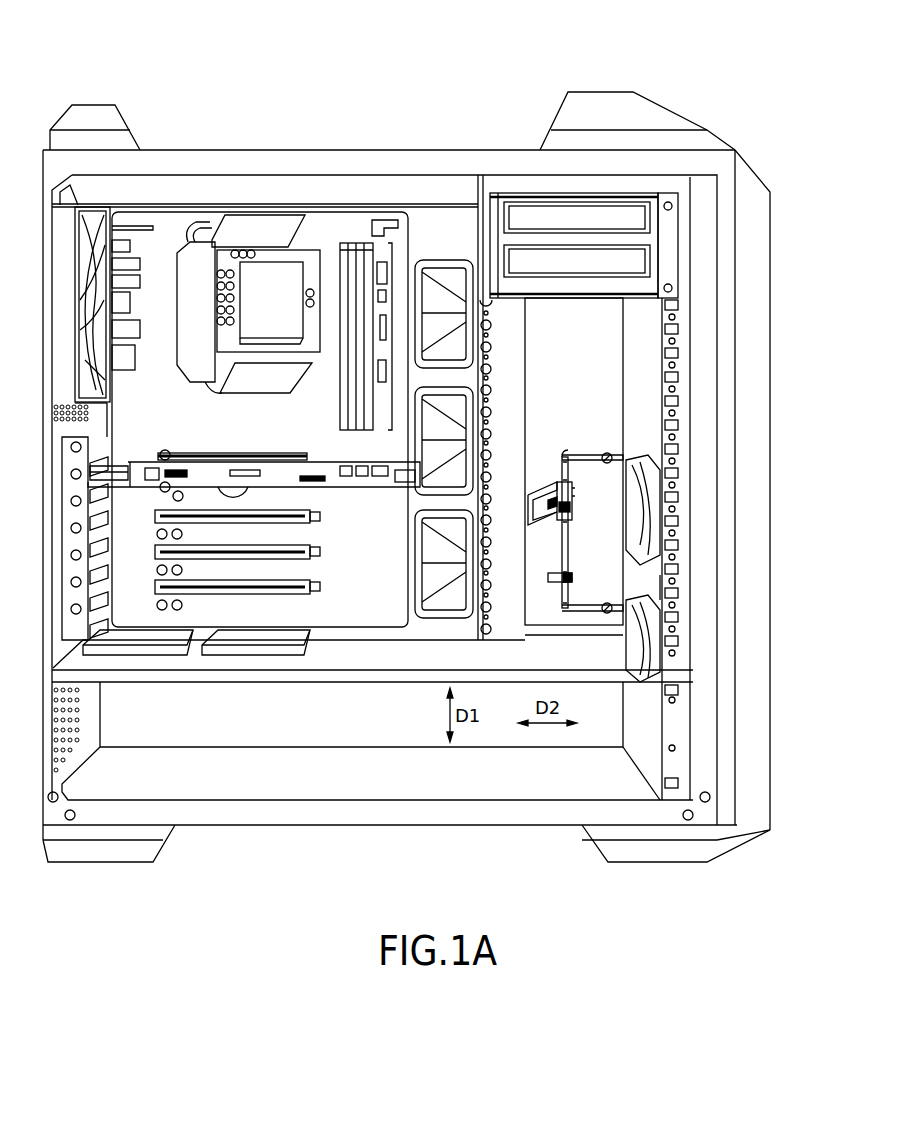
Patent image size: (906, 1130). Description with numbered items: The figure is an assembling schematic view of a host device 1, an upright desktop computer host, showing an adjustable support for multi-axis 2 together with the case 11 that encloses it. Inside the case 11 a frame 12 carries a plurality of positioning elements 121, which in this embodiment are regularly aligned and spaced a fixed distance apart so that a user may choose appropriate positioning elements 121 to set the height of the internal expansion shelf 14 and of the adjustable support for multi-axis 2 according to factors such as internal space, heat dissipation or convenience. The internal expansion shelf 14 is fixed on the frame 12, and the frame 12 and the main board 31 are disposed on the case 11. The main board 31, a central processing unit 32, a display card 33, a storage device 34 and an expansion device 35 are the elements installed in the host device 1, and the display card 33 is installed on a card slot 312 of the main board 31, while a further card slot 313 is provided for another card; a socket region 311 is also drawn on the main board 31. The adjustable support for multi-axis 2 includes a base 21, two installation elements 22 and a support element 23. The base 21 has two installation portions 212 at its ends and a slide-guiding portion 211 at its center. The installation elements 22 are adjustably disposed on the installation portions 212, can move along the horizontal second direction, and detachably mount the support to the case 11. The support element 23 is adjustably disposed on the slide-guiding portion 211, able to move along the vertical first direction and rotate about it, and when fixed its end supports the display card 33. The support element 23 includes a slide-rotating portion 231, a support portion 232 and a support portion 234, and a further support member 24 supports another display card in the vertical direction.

The host device 1 is at (175, 38).
The case 11 is at (193, 168).
The frame 12 is at (515, 323).
The positioning elements 121 is at (490, 432).
The internal expansion shelf 14 is at (672, 212).
The adjustable support for multi-axis 2 is at (562, 539).
The base 21 is at (568, 535).
The slide-guiding portion 211 is at (562, 476).
The installation portions 212 is at (581, 456).
The installation elements 22 is at (607, 453).
The support element 23 is at (572, 492).
The slide-rotating portion 231 is at (570, 508).
The support portion 232 is at (540, 522).
The support portion 234 is at (527, 512).
The support member 24 is at (548, 577).
The main board 31 is at (407, 225).
The CPU socket 311 is at (312, 267).
The central processing unit 32 is at (274, 268).
The card slot 312 is at (237, 465).
The display card 33 is at (313, 470).
The card slot 313 is at (302, 498).
The storage device 34 is at (645, 225).
The expansion device 35 is at (645, 263).